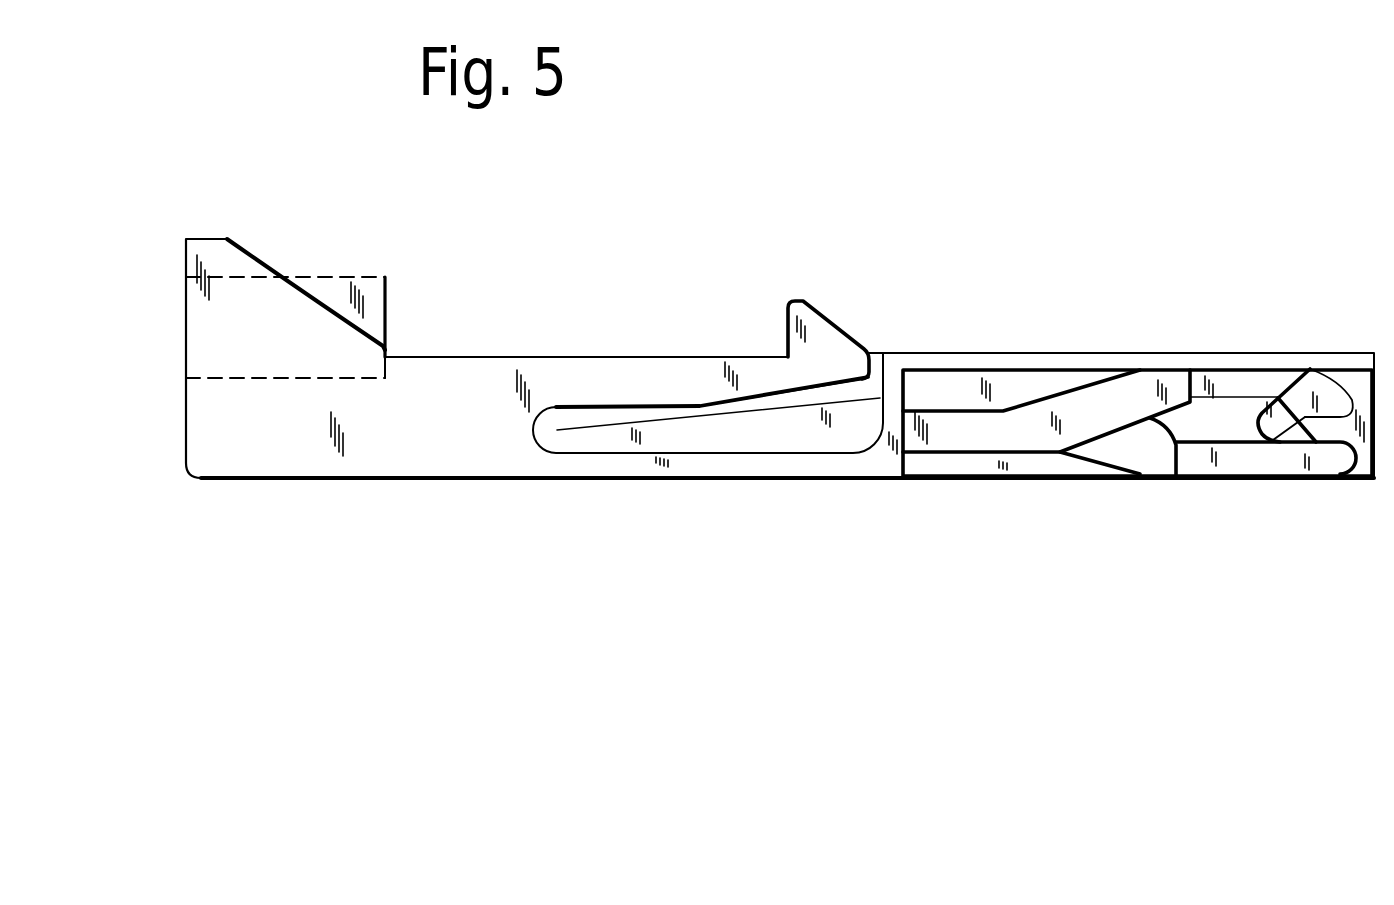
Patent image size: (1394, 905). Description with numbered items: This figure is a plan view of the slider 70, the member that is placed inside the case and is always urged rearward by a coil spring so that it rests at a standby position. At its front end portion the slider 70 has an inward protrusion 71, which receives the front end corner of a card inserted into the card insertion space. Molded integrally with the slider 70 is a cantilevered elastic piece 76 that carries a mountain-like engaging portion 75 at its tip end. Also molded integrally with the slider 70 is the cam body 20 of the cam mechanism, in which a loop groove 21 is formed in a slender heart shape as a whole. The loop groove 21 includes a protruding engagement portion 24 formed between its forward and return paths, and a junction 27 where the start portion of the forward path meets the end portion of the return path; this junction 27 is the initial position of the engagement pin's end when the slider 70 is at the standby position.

The slider 70 is at (473, 462).
The inward protrusion 71 is at (293, 310).
The cantilevered elastic piece 76 is at (683, 366).
The mountain-like engaging portion 75 is at (818, 325).
The cam body 20 is at (1043, 472).
The loop groove 21 is at (1118, 398).
The junction 27 is at (950, 438).
The protruding engagement portion 24 is at (1228, 410).